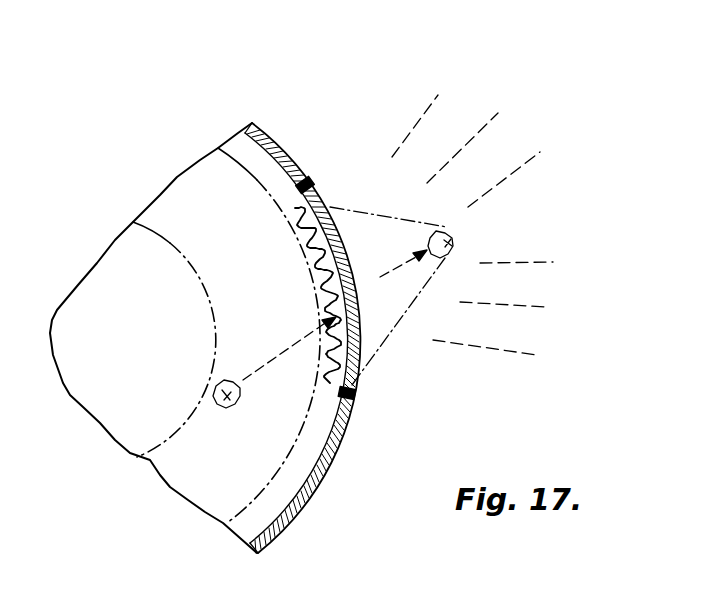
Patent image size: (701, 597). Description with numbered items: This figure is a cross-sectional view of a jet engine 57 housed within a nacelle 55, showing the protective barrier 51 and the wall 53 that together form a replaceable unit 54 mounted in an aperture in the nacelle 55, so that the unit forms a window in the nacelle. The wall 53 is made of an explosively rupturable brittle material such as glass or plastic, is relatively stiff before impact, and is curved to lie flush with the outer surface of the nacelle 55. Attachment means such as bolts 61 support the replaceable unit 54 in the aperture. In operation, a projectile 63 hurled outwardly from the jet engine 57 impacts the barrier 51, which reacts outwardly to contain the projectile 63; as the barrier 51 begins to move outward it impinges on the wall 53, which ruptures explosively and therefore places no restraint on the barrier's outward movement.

The protective barrier 51 is at (302, 217).
The wall 53 is at (333, 224).
The replaceable unit 54 is at (361, 282).
The nacelle 55 is at (326, 478).
The jet engine 57 is at (118, 397).
The bolts 61 is at (310, 184).
The projectile 63 is at (457, 242).